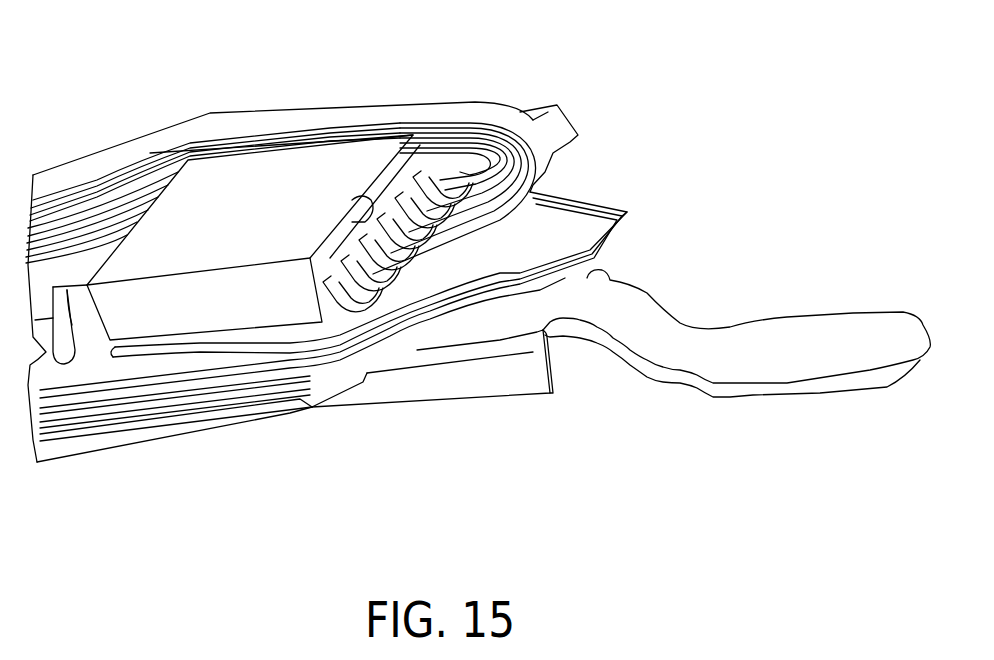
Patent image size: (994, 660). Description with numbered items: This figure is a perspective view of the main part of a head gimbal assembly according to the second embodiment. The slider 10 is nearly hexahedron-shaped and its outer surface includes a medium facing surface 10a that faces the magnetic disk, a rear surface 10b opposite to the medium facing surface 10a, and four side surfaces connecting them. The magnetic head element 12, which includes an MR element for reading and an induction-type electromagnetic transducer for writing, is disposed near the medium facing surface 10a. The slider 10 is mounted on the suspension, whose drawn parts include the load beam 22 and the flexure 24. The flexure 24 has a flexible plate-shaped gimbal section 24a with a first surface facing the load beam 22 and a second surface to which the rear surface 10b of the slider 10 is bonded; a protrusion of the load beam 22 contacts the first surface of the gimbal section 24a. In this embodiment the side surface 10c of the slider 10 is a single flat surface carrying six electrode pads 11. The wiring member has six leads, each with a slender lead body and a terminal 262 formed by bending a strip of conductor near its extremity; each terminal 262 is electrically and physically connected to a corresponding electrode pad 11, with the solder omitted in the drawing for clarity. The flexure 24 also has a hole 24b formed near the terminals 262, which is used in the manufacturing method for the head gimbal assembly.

The slider 10 is at (256, 148).
The medium facing surface 10a is at (217, 168).
The rear surface 10b is at (165, 330).
The side surface 10c is at (438, 177).
The electrode pads 11 is at (322, 322).
The magnetic head element 12 is at (345, 221).
The load beam 22 is at (413, 407).
The flexure 24 is at (620, 207).
The gimbal section 24a is at (228, 343).
The hole 24b is at (297, 313).
The terminal 262 is at (433, 183).